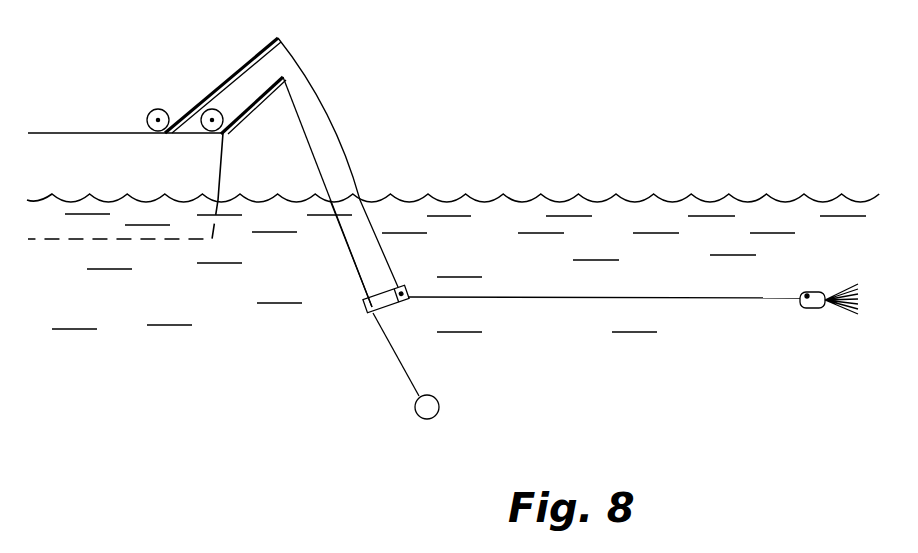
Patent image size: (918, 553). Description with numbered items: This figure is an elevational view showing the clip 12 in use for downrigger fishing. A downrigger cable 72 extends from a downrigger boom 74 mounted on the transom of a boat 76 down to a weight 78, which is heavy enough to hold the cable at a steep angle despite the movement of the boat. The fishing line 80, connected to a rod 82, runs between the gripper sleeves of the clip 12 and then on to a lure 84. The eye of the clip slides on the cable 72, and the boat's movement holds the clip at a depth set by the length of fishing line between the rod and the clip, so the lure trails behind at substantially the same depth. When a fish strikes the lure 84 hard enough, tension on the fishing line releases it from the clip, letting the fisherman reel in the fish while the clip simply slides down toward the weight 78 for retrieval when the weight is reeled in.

The clip 12 is at (362, 313).
The downrigger cable 72 is at (342, 240).
The downrigger boom 74 is at (253, 107).
The boat 76 is at (225, 155).
The weight 78 is at (415, 407).
The fishing line 80 is at (332, 105).
The rod 82 is at (237, 70).
The lure 84 is at (812, 310).